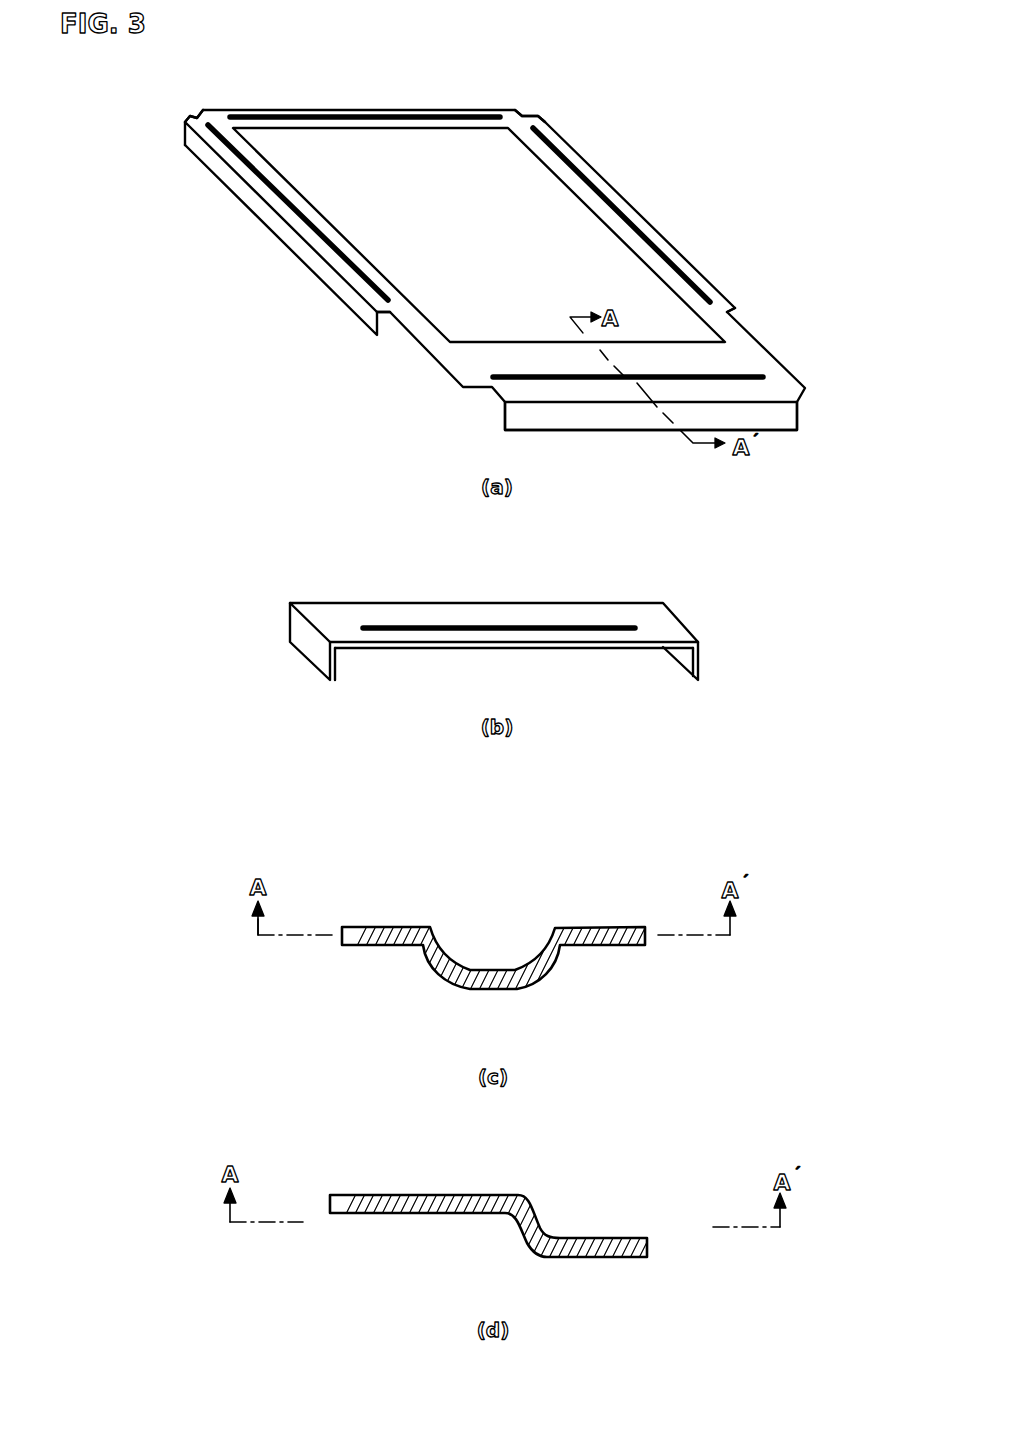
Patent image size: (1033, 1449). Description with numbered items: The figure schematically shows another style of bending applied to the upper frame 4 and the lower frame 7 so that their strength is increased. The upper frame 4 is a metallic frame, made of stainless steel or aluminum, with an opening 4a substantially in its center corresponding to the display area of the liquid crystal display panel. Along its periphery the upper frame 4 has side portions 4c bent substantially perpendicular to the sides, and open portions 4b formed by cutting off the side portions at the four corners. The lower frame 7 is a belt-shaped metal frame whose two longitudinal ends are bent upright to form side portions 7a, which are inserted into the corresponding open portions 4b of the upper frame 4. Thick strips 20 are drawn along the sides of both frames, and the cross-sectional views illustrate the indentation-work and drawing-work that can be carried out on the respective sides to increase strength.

The upper frame 4 is at (665, 232).
The opening 4a is at (470, 235).
The open portions 4b is at (190, 110).
The side portions 4c is at (273, 223).
The elastic strips 20 is at (383, 112).
The lower frame 7 is at (547, 647).
The side portions 7a is at (310, 638).